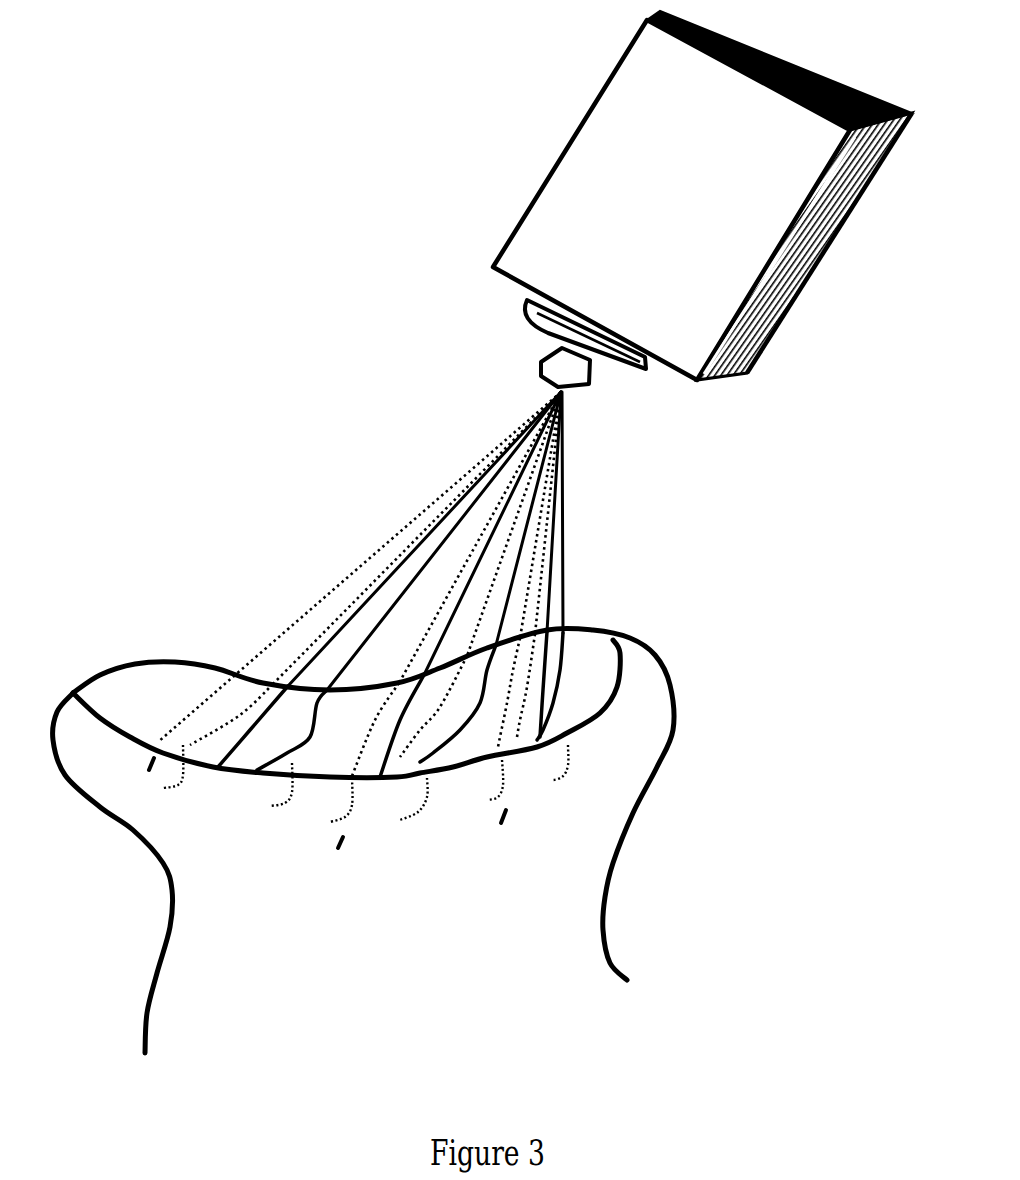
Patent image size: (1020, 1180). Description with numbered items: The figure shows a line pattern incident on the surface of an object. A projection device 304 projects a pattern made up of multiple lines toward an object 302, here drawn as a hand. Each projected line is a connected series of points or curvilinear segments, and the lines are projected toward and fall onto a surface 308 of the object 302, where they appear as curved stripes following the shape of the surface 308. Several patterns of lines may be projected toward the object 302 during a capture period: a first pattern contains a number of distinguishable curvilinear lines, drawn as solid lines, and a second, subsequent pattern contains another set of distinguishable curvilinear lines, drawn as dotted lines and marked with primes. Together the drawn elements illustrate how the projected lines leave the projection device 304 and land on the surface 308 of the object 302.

The object 302 is at (663, 767).
The projector / imaging device 304 is at (703, 382).
The surface 308 is at (167, 690).